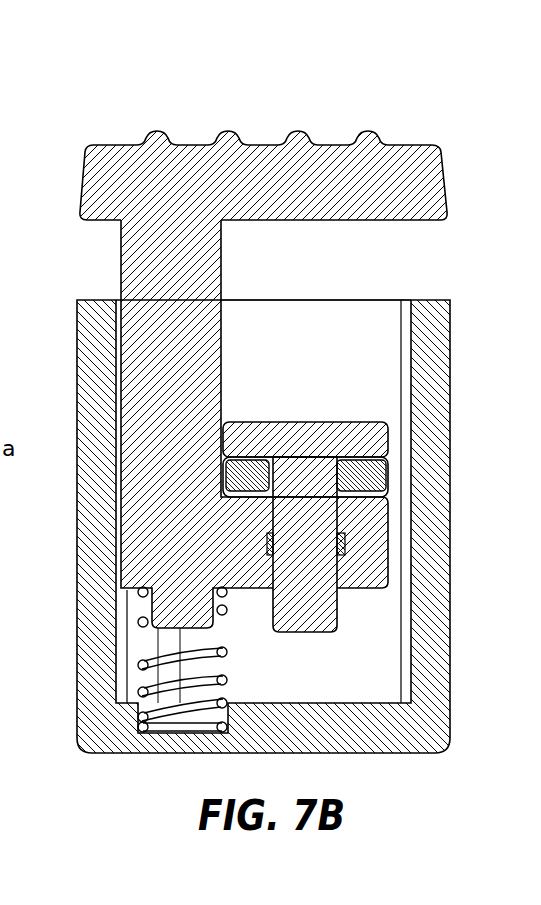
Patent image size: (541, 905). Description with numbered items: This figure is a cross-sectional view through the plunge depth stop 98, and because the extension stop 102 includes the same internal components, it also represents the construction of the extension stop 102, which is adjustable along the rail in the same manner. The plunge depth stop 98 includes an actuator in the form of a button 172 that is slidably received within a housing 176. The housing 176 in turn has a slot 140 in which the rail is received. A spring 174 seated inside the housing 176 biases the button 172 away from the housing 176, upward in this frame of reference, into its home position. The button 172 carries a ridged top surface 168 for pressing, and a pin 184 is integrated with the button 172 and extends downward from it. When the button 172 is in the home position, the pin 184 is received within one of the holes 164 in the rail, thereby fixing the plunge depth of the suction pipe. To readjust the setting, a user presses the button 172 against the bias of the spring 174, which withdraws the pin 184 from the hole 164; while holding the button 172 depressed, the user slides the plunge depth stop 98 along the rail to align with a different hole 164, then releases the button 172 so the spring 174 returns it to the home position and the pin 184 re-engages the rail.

The plunge depth stop 98 is at (226, 334).
The extension stop 102 is at (226, 334).
The button 172 is at (100, 147).
The grip ridges 168 is at (372, 108).
The slot 140 is at (387, 442).
The holes 164 is at (270, 480).
The pin 184 is at (320, 598).
The housing 176 is at (93, 603).
The spring 174 is at (142, 663).